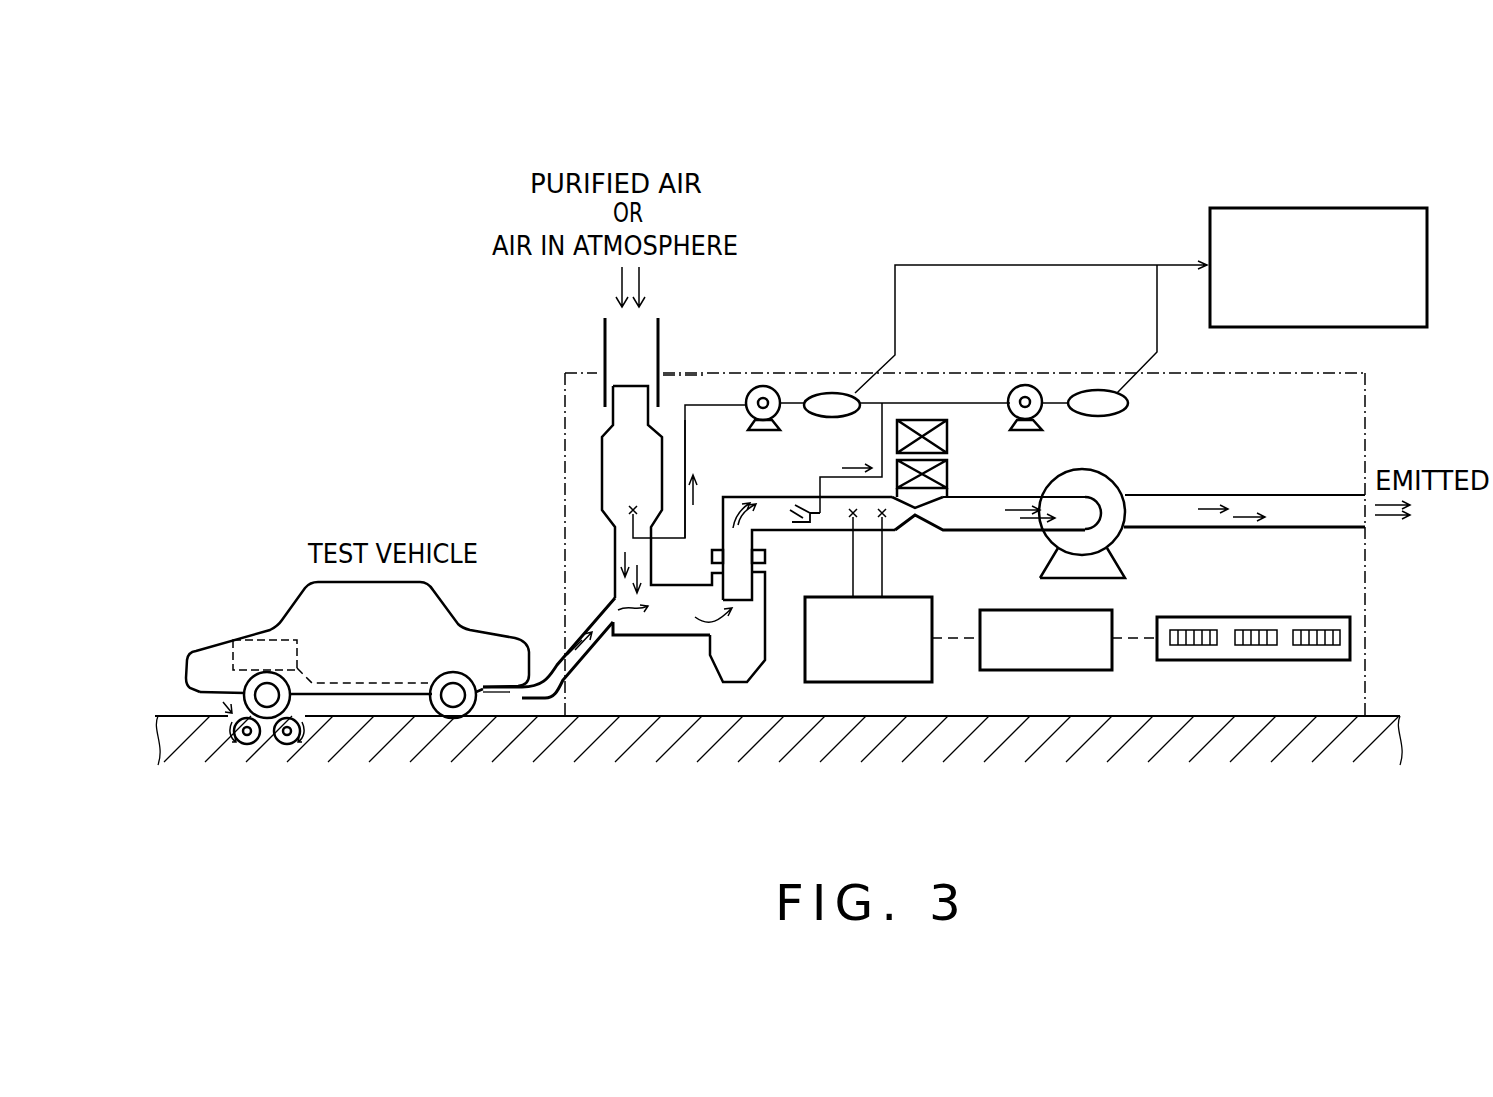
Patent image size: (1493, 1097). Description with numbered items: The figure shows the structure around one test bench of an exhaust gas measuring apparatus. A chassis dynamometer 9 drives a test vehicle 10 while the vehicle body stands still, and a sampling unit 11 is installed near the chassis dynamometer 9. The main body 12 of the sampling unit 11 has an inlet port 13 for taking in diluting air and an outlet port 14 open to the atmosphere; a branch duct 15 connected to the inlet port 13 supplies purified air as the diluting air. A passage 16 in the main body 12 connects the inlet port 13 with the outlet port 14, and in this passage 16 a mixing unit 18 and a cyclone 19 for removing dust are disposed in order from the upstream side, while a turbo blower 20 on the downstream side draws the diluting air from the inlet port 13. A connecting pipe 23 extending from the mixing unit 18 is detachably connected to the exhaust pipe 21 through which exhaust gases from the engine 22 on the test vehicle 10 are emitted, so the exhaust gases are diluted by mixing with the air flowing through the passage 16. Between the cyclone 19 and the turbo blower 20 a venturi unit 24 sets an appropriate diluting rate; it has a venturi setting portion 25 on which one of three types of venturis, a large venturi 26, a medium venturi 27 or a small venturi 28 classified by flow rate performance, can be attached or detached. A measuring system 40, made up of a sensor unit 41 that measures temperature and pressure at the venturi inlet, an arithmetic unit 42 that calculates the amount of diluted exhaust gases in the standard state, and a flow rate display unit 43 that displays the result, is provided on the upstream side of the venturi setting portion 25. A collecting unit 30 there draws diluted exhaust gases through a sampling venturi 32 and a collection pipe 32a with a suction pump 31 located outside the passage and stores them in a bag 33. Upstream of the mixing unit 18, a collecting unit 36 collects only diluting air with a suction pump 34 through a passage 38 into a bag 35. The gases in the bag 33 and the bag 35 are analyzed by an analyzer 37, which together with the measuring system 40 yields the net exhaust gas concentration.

The chassis dynamometer 9 is at (262, 746).
The test vehicle 10 is at (490, 630).
The sampling unit 11 is at (1382, 432).
The main body 12 is at (1368, 638).
The inlet port 13 is at (640, 376).
The outlet port 14 is at (1368, 530).
The branch duct 15 is at (605, 340).
The passage 16 is at (1008, 532).
The mixing unit 18 is at (657, 638).
The cyclone 19 is at (768, 643).
The turbo blower 20 is at (1113, 478).
The exhaust pipe 21 is at (500, 703).
The engine 22 is at (275, 637).
The connecting pipe 23 is at (580, 662).
The venturi unit 24 is at (947, 543).
The venturi setting portion 25 is at (917, 527).
The large venturi 26 is at (937, 420).
The medium venturi 27 is at (952, 497).
The small venturi 28 is at (892, 493).
The collecting unit 30 is at (798, 479).
The suction pump 31 is at (1033, 387).
The sampling venturi 32 is at (803, 527).
The collection pipe 32a is at (882, 452).
The bag 33 is at (1130, 405).
The suction pump 34 is at (770, 387).
The bag 35 is at (838, 393).
The collecting unit 36 is at (711, 389).
The analyzer 37 is at (1371, 208).
The passage 38 is at (707, 478).
The measuring system 40 is at (1034, 702).
The sensor unit 41 is at (934, 684).
The arithmetic unit 42 is at (1083, 672).
The flow rate display unit 43 is at (1250, 662).